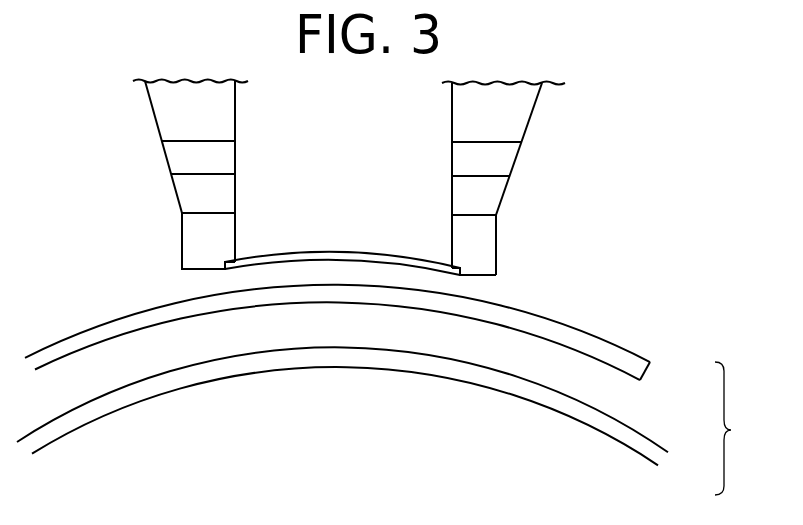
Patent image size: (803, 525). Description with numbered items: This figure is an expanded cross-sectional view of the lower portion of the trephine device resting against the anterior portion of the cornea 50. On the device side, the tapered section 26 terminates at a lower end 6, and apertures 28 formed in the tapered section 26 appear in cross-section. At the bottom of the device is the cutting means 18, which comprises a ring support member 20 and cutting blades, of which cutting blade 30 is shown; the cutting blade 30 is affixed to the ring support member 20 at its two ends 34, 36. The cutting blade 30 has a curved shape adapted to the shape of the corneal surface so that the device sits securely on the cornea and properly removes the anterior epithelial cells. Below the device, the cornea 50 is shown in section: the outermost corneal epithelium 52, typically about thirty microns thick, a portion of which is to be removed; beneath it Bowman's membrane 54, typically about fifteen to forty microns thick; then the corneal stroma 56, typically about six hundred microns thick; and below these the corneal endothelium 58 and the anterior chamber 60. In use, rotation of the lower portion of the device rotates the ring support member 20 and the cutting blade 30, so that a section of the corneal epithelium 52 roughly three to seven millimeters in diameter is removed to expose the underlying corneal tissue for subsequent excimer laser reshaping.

The lower end 6 is at (497, 213).
The cutting means 18 is at (495, 259).
The ring support member 20 is at (485, 240).
The tapered section 26 is at (533, 110).
The apertures 28 is at (175, 155).
The cutting blade 30 is at (340, 252).
The end 34 is at (445, 260).
The end 36 is at (236, 257).
The cornea 50 is at (744, 428).
The corneal epithelium 52 is at (622, 357).
The Bowman's membrane 54 is at (651, 369).
The corneal stroma 56 is at (382, 340).
The corneal endothelium 58 is at (128, 398).
The anterior chamber 60 is at (385, 445).